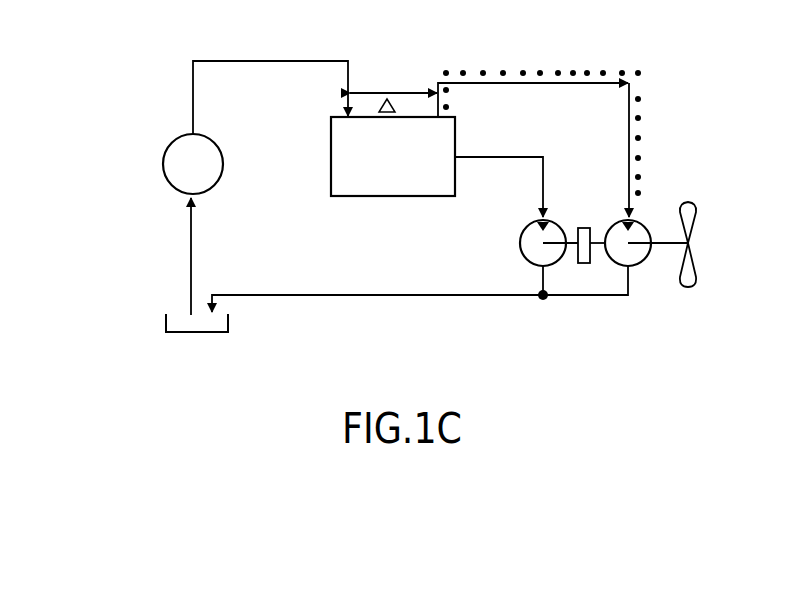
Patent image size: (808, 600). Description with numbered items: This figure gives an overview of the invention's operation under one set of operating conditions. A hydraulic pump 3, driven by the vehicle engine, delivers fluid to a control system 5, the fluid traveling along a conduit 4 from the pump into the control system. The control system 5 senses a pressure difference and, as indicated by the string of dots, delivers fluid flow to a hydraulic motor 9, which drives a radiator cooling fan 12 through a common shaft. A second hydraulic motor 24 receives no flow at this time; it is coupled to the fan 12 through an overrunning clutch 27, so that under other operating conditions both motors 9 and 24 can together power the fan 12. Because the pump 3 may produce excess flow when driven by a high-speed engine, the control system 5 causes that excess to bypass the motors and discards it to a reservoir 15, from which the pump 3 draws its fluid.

The hydraulic pump 3 is at (221, 152).
The conduit 4 is at (194, 85).
The control system 5 is at (363, 196).
The hydraulic motor 9 is at (644, 223).
The radiator cooling fan 12 is at (690, 202).
The reservoir 15 is at (230, 326).
The hydraulic motor 24 is at (520, 244).
The overrunning clutch 27 is at (585, 228).